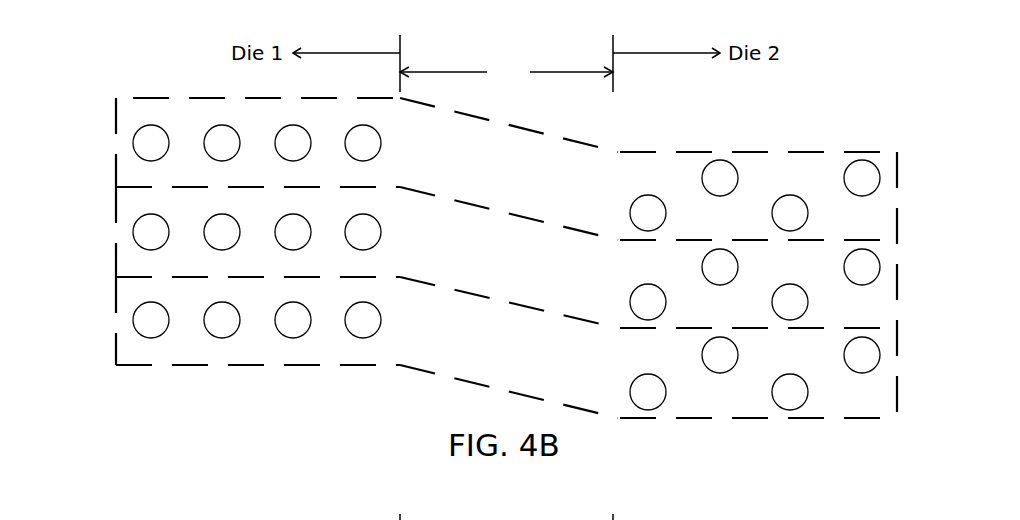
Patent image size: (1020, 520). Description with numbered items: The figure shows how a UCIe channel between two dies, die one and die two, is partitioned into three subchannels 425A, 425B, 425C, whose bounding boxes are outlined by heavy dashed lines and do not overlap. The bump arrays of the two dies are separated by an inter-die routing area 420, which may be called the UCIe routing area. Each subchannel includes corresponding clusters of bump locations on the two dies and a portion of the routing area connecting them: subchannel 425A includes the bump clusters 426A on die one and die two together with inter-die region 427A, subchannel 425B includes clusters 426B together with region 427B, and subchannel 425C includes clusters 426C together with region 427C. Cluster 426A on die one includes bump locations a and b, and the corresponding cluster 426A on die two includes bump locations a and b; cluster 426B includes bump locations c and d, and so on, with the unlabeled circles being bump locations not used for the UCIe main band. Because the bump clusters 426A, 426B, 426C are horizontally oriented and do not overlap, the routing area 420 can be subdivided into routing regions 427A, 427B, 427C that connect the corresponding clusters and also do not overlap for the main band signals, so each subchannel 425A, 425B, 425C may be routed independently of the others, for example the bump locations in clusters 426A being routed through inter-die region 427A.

The inter-die routing area 420 is at (506, 72).
The first subchannel 425A is at (222, 142).
The second subchannel 425B is at (222, 232).
The third subchannel 425C is at (222, 321).
The first cluster of bump locations 426A is at (506, 166).
The second cluster of bump locations 426B is at (506, 255).
The third cluster of bump locations 426C is at (506, 345).
The first inter-die routing region 427A is at (509, 140).
The second inter-die routing region 427B is at (509, 228).
The third inter-die routing region 427C is at (509, 317).